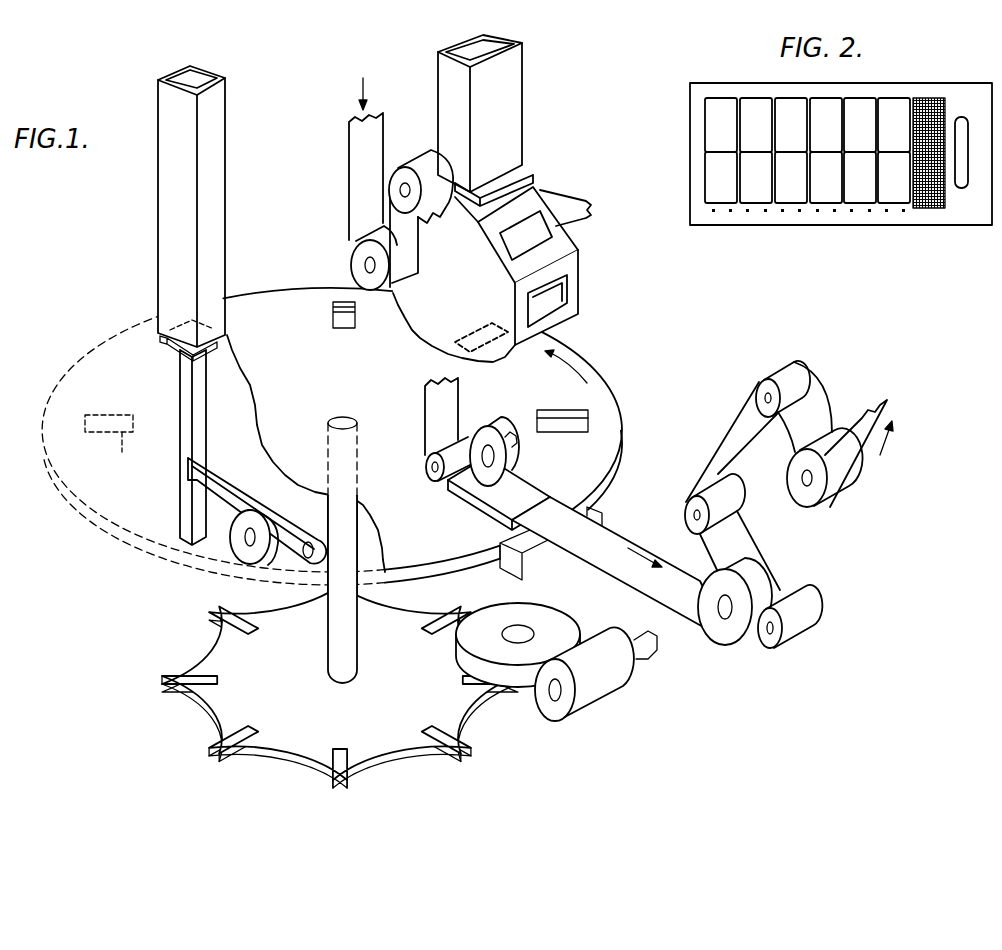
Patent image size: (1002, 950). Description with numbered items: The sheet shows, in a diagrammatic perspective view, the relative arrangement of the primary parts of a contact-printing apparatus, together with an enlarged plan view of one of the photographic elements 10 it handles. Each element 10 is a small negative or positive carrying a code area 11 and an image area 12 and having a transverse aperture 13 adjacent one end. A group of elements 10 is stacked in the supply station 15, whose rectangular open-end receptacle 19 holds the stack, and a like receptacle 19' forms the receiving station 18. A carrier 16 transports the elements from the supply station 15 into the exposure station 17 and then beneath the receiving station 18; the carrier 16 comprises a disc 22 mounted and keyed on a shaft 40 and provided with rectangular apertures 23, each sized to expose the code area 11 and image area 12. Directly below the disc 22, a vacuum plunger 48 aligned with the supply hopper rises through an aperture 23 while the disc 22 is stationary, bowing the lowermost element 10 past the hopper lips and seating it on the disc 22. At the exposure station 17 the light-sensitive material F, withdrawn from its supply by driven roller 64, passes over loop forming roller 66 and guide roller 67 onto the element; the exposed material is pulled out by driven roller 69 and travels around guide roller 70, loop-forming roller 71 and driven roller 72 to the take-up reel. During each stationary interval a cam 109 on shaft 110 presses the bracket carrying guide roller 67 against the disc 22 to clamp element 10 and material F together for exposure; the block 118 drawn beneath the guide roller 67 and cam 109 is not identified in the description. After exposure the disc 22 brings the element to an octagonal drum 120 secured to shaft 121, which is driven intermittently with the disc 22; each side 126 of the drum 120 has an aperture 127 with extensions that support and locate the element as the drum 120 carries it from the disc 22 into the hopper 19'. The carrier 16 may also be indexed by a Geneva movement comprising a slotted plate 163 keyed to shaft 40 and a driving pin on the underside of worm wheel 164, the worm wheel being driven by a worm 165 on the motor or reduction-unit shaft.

In FIG. 2, the photographic element 10 is at (816, 217).
In FIG. 2, the code area 11 is at (925, 197).
In FIG. 2, the image area 12 is at (752, 103).
In FIG. 2, the transverse aperture 13 is at (961, 120).
In FIG. 1, the supply station 15 is at (152, 322).
In FIG. 1, the carrier 16 is at (626, 400).
In FIG. 1, the exposure station 17 is at (578, 499).
In FIG. 1, the receiving station 18 is at (522, 170).
In FIG. 1, the receptacle 19 is at (166, 206).
In FIG. 1, the receptacle 19' is at (500, 113).
In FIG. 1, the disc 22 is at (343, 390).
In FIG. 1, the aperture 23 is at (555, 403).
In FIG. 1, the shaft 40 is at (352, 640).
In FIG. 1, the plunger 48 is at (182, 384).
In FIG. 1, the driven roller 64 is at (352, 260).
In FIG. 1, the loop forming roller 66 is at (398, 170).
In FIG. 1, the guide roller 67 is at (455, 447).
In FIG. 1, the driven roller 69 is at (736, 634).
In FIG. 1, the guide roller 70 is at (722, 496).
In FIG. 1, the loop-forming roller 71 is at (766, 385).
In FIG. 1, the driven roller 72 is at (820, 503).
In FIG. 1, the cam 109 is at (510, 463).
In FIG. 1, the shaft 110 is at (508, 436).
In FIG. 1, the block 118 is at (492, 495).
In FIG. 1, the drum 120 is at (575, 262).
In FIG. 1, the shaft 121 is at (571, 192).
In FIG. 1, the side 126 is at (560, 243).
In FIG. 1, the aperture 127 is at (570, 318).
In FIG. 1, the slotted plate 163 is at (215, 710).
In FIG. 1, the worm wheel 164 is at (541, 614).
In FIG. 1, the worm 165 is at (590, 705).
In FIG. 1, the light-sensitive material F is at (425, 417).